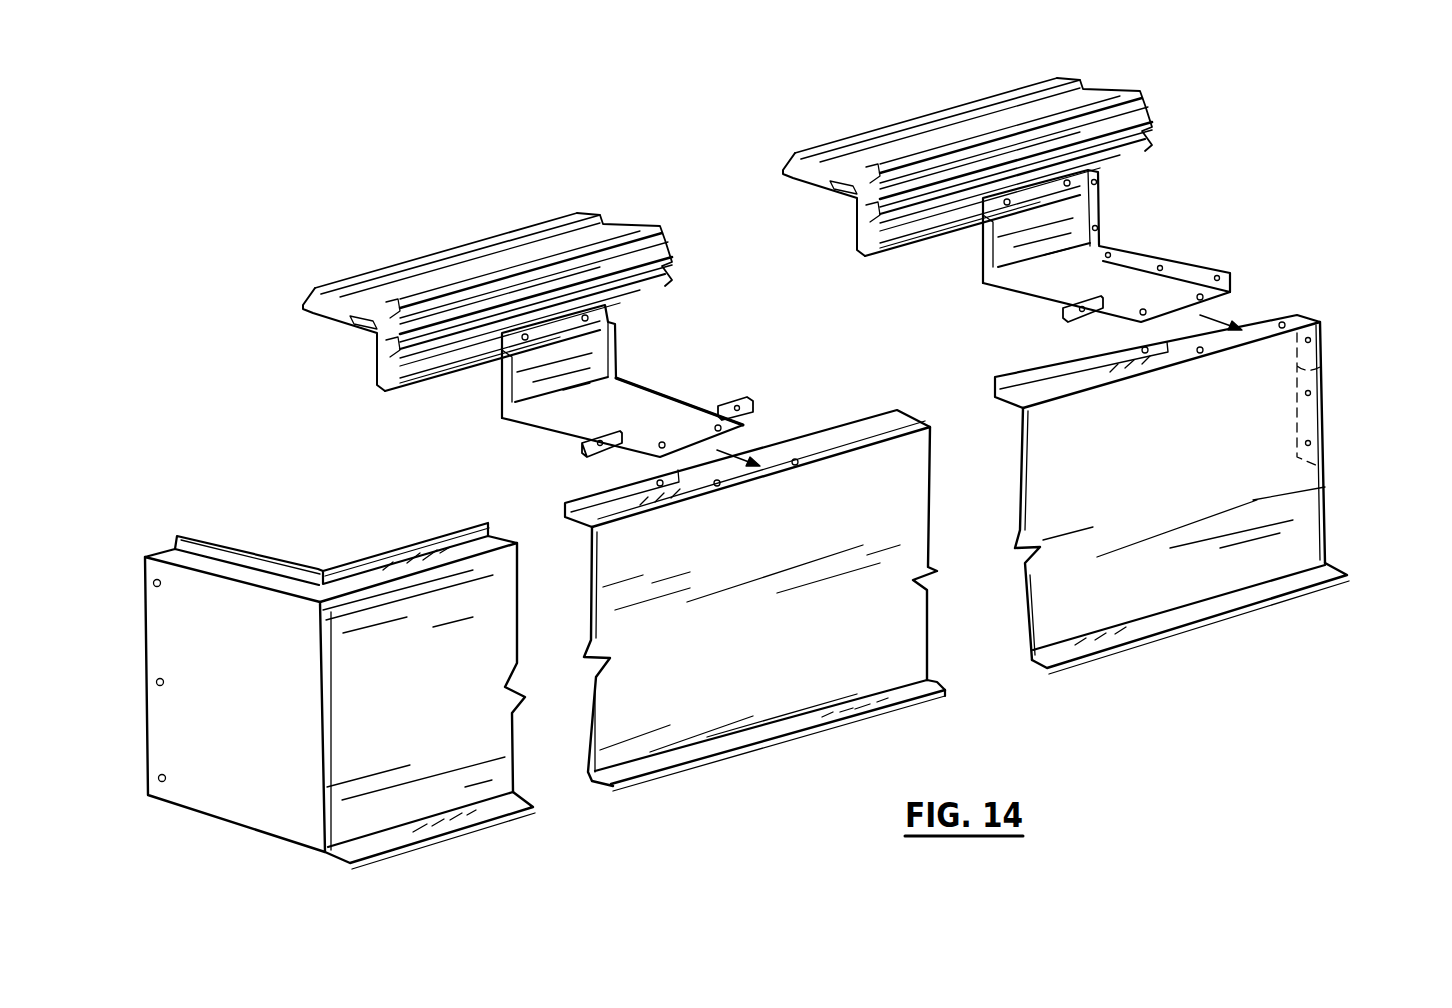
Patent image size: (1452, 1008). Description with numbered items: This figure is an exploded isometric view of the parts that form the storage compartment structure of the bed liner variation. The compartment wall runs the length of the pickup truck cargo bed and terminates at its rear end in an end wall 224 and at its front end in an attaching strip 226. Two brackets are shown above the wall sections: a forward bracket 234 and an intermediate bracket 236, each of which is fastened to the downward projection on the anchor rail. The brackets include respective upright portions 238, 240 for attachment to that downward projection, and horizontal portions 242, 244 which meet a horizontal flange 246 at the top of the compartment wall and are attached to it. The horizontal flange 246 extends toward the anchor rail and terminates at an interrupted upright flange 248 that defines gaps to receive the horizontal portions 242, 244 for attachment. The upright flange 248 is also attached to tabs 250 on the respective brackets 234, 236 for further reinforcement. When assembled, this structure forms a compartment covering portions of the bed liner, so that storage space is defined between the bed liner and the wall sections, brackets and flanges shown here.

The end wall 224 is at (227, 820).
The attaching strip 226 is at (1136, 494).
The forward bracket 234 is at (1067, 261).
The intermediate bracket 236 is at (621, 388).
The upright portion 238 is at (588, 360).
The upright portion 240 is at (1015, 232).
The horizontal portion 242 is at (598, 410).
The horizontal portion 244 is at (1073, 278).
The horizontal flange 246 is at (737, 477).
The interrupted upright flange 248 is at (862, 422).
The tabs 250 is at (745, 398).